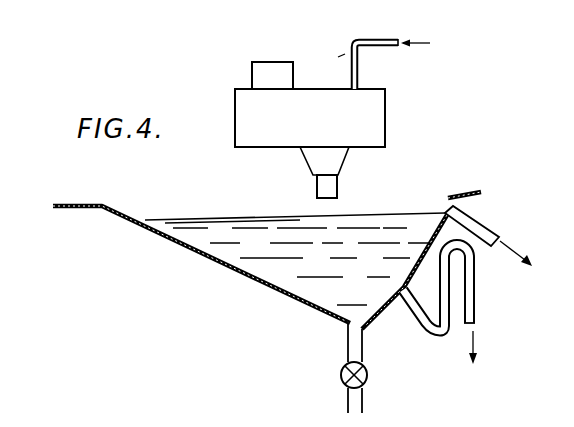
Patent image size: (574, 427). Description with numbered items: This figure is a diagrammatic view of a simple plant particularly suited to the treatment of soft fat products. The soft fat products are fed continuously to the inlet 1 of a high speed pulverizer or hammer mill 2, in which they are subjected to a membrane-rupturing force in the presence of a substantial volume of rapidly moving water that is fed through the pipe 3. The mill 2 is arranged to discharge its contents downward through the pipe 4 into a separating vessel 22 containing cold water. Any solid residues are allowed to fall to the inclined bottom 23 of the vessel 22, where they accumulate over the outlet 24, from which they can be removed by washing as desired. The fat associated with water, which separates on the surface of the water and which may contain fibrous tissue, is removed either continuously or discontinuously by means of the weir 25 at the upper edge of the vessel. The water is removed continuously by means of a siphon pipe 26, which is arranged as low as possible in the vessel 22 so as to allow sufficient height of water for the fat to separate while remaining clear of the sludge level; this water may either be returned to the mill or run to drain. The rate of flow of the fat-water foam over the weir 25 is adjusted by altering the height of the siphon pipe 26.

The inlet 1 is at (268, 72).
The high speed pulverizer or hammer mill 2 is at (385, 116).
The pipe 3 is at (378, 40).
The pipe 4 is at (337, 185).
The separating vessel 22 is at (263, 243).
The inclined bottom 23 is at (241, 270).
The outlet 24 is at (367, 376).
The weir 25 is at (432, 212).
The siphon pipe 26 is at (476, 289).